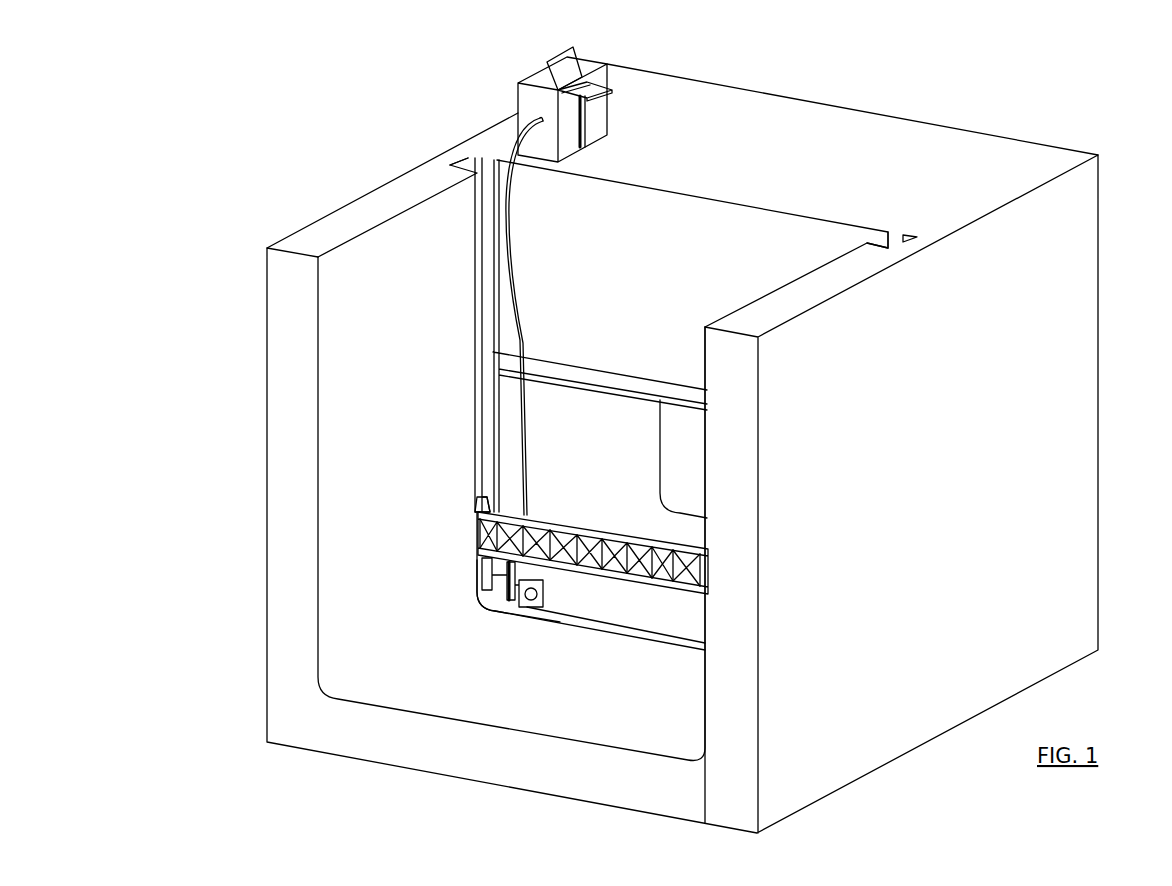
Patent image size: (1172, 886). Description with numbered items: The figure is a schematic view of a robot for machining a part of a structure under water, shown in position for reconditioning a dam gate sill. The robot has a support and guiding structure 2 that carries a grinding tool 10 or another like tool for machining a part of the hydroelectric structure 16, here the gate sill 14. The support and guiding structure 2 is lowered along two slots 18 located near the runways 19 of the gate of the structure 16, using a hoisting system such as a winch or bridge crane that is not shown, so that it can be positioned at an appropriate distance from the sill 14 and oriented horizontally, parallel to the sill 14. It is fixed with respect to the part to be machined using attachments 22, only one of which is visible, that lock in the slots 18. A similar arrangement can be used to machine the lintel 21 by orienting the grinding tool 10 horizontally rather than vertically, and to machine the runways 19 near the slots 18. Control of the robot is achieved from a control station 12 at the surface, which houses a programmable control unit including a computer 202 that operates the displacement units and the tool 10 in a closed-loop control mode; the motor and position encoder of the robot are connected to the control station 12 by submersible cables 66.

The support and guiding structure 2 is at (456, 537).
The grinding tool 10 is at (515, 607).
The control station 12 is at (520, 98).
The gate sill 14 is at (640, 627).
The hydroelectric structure 16 is at (1073, 400).
The slots 18 is at (460, 166).
The runways 19 is at (485, 165).
The lintel 21 is at (513, 363).
The attachments 22 is at (470, 499).
The submersible cables 66 is at (515, 250).
The computer 202 is at (567, 60).